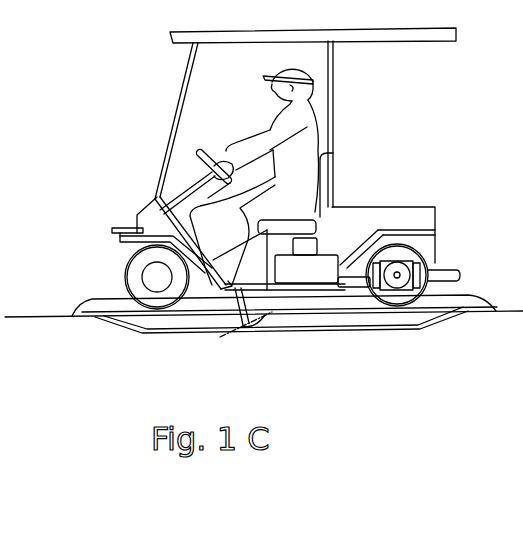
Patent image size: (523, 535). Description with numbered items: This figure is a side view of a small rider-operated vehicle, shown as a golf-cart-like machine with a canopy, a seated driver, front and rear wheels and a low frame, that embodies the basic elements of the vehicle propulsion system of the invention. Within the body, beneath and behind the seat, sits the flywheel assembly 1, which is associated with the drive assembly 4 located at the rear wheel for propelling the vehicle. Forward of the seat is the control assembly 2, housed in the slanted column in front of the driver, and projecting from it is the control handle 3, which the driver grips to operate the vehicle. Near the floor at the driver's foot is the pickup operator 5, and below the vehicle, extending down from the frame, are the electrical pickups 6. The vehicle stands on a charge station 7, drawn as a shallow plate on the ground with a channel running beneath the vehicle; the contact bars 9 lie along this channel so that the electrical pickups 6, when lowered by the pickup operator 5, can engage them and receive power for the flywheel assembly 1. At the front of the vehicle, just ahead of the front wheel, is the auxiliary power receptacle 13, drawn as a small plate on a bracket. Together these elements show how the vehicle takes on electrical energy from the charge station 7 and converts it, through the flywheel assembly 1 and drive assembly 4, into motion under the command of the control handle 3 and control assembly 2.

The flywheel assembly 1 is at (329, 246).
The control assembly 2 is at (157, 214).
The control handle 3 is at (230, 166).
The drive assembly 4 is at (418, 258).
The pickup operator 5 is at (238, 284).
The electrical pickups 6 is at (234, 323).
The charge station 7 is at (97, 300).
The contact bars 9 is at (319, 325).
The auxiliary power receptacle 13 is at (106, 226).